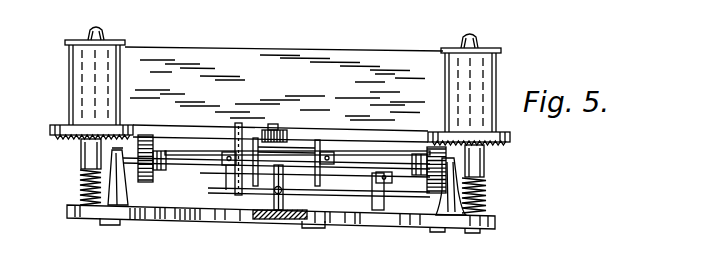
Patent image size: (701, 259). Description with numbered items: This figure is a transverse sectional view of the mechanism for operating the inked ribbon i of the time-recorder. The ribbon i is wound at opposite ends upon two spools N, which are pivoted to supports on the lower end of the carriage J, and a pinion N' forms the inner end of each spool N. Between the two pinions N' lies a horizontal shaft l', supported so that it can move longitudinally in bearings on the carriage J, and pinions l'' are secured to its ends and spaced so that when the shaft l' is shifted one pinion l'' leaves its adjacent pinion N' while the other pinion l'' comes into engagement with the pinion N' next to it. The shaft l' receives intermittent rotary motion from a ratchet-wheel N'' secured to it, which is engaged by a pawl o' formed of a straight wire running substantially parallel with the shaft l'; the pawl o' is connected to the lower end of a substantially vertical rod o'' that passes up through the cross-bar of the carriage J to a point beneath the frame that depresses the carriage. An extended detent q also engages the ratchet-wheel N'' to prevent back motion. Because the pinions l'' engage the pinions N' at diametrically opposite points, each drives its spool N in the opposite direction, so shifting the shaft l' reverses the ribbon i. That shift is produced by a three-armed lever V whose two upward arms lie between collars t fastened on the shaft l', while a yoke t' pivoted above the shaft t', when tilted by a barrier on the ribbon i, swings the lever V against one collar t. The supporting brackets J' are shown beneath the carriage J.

The spool N is at (290, 71).
The pinion N' is at (286, 169).
The ratchet-wheel N'' is at (223, 159).
The horizontal shaft l' is at (276, 156).
The pinion l'' is at (292, 160).
The collar t is at (288, 160).
The yoke t' is at (284, 124).
The three-armed lever V is at (319, 150).
The detent q is at (222, 160).
The pawl o' is at (393, 193).
The rod o'' is at (319, 192).
The carriage J is at (281, 227).
The bracket support J' is at (287, 194).
The inked ribbon i is at (284, 89).